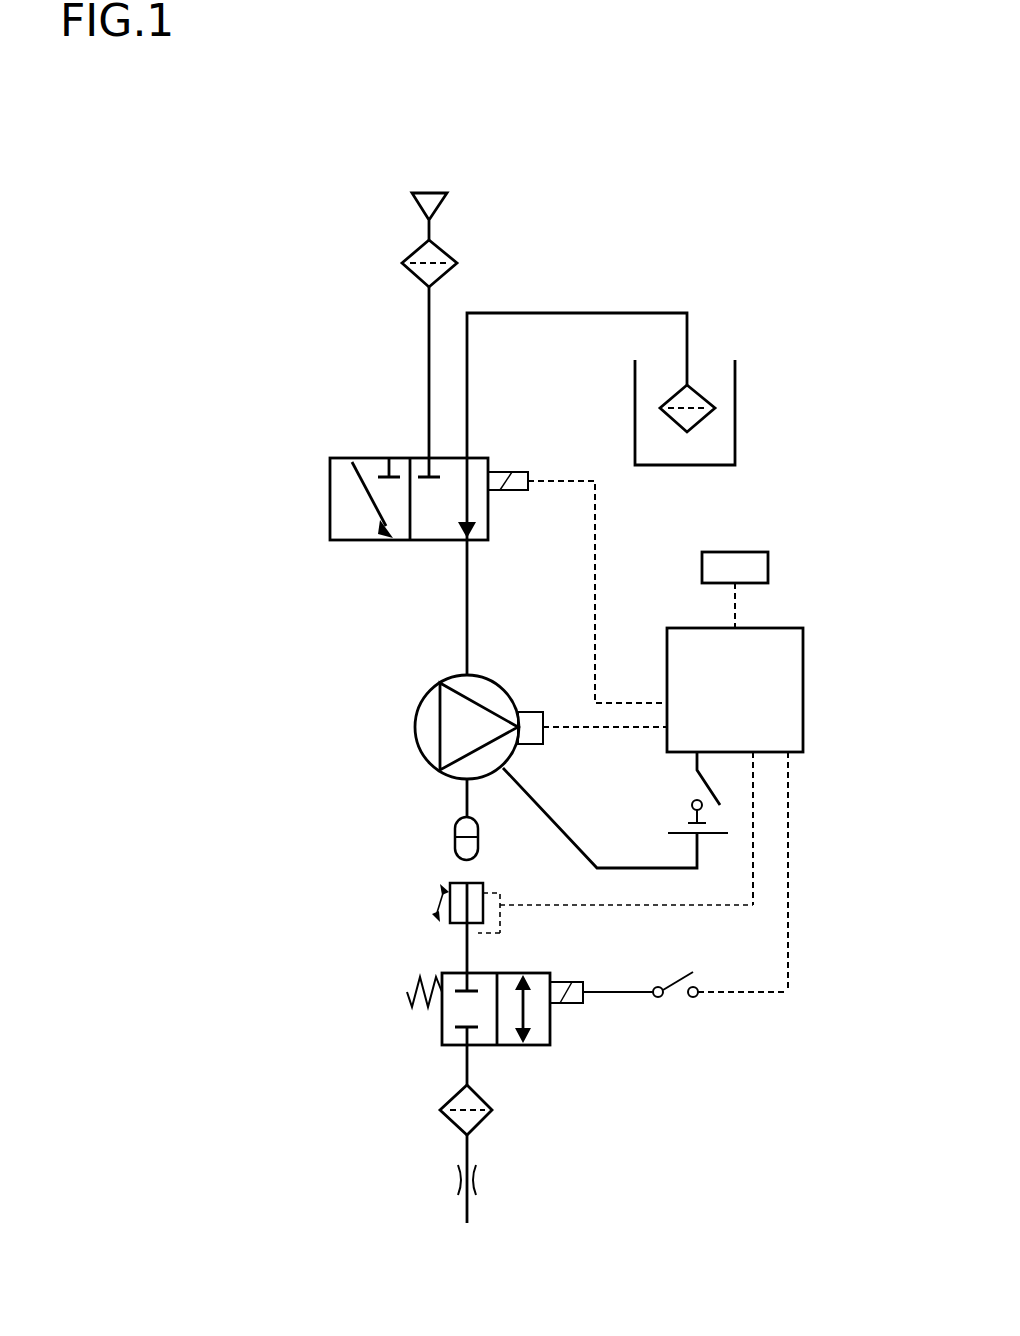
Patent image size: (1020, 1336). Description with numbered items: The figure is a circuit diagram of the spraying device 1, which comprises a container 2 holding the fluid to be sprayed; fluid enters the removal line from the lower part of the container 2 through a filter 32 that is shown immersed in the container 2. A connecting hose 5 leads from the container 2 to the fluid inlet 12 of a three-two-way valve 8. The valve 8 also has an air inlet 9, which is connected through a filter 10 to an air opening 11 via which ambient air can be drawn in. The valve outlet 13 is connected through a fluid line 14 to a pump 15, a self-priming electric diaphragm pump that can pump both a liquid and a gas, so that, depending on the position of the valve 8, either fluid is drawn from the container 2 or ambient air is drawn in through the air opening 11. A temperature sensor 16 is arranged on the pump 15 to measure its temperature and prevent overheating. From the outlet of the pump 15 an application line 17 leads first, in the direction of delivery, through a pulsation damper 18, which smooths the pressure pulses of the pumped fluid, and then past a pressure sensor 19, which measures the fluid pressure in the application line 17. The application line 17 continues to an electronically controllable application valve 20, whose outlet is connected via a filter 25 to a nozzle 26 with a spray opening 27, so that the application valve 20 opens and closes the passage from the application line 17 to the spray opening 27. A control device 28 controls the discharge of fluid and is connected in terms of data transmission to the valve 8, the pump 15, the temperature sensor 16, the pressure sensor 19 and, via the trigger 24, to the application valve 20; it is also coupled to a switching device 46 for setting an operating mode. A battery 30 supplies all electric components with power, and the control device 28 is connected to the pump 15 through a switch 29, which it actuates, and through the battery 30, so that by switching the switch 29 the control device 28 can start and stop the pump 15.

The spraying device 1 is at (296, 657).
The container 2 is at (738, 405).
The connecting hose 5 is at (563, 313).
The 3/2-way valve 8 is at (342, 448).
The air inlet 9 is at (424, 457).
The filter 10 is at (428, 260).
The air opening 11 is at (430, 195).
The fluid inlet 12 is at (478, 458).
The valve outlet 13 is at (470, 540).
The fluid line 14 is at (467, 612).
The pump 15 is at (428, 733).
The temperature sensor 16 is at (530, 737).
The application line 17 is at (467, 798).
The pulsation damper 18 is at (455, 845).
The pressure sensor 19 is at (440, 905).
The application valve 20 is at (447, 1017).
The trigger 24 is at (679, 1004).
The filter 25 is at (476, 1105).
The nozzle 26 is at (487, 1178).
The spray opening 27 is at (482, 1217).
The control device 28 is at (665, 736).
The switch 29 is at (720, 787).
The battery 30 is at (733, 826).
The filter 32 is at (692, 405).
The switching device 46 is at (762, 566).